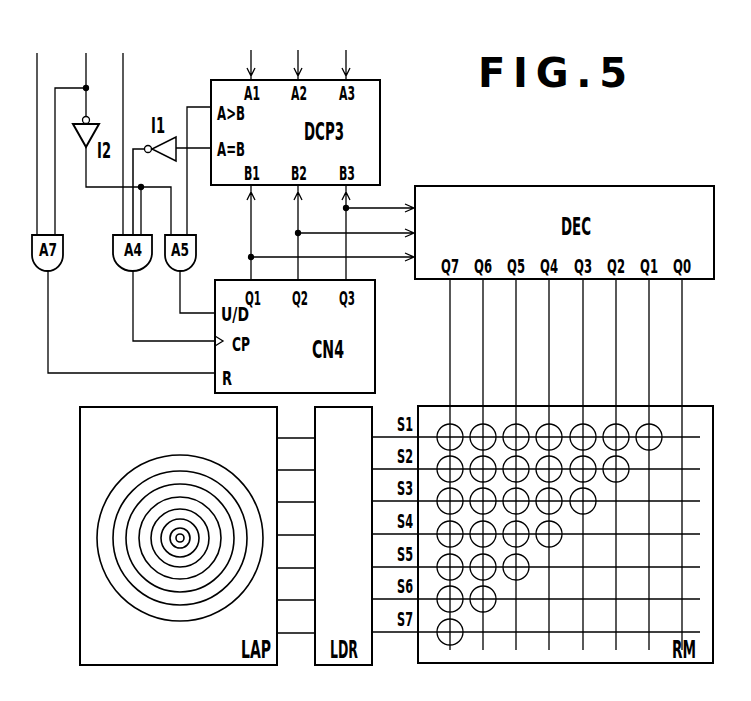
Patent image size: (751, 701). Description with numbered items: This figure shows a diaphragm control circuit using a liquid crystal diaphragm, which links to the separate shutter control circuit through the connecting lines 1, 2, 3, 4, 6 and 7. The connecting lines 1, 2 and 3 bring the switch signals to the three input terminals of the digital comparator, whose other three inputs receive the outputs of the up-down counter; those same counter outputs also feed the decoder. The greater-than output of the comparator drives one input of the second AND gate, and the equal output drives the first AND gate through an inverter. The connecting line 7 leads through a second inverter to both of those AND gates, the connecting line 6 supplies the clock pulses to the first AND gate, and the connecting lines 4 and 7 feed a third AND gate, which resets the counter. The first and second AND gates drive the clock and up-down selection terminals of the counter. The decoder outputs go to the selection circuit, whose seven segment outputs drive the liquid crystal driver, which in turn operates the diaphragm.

The connecting line 1 is at (251, 53).
The connecting line 2 is at (298, 53).
The connecting line 3 is at (346, 53).
The connecting line 4 is at (37, 131).
The connecting line 6 is at (123, 131).
The connecting line 7 is at (77, 131).